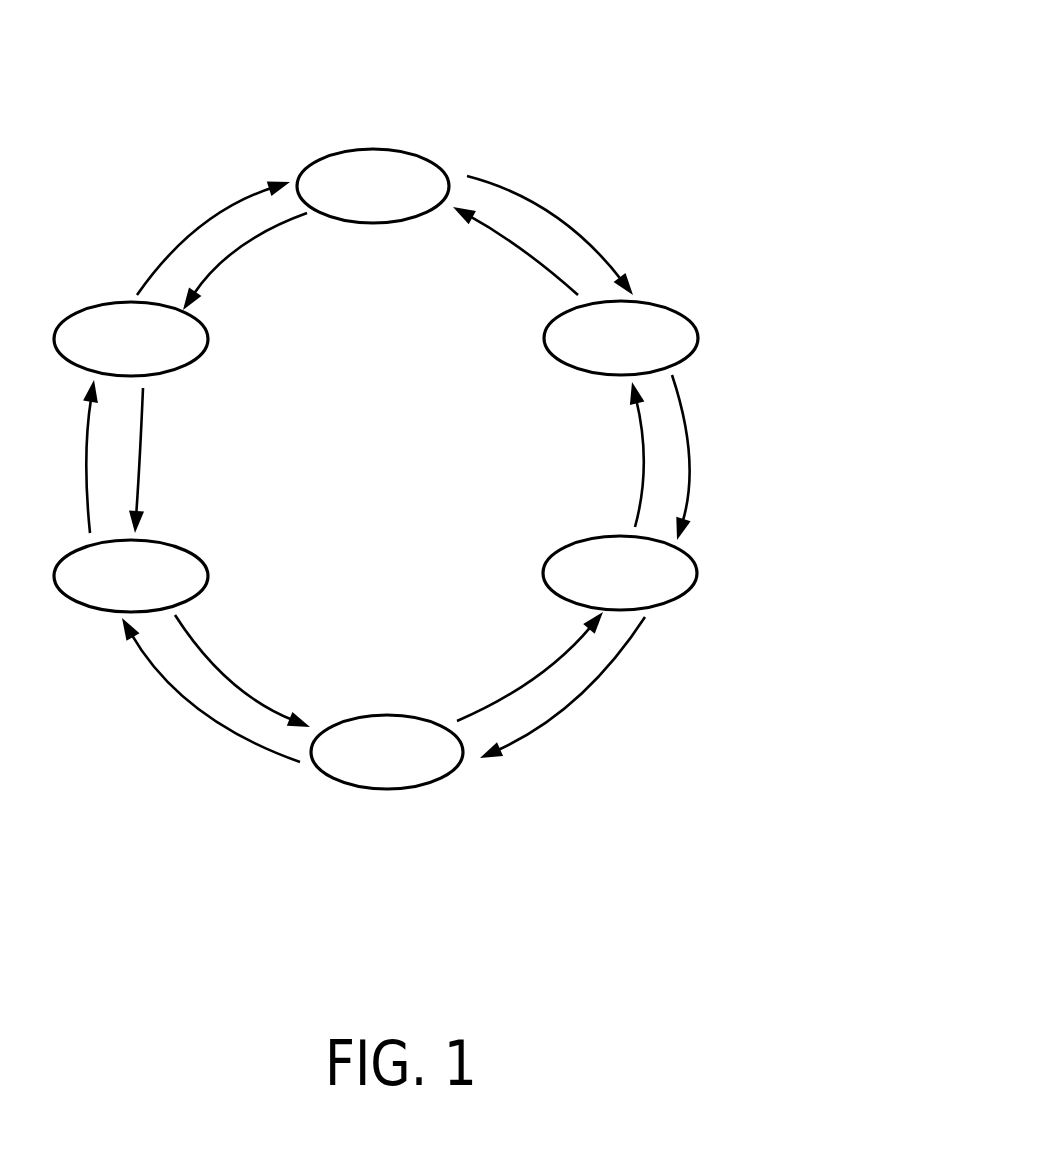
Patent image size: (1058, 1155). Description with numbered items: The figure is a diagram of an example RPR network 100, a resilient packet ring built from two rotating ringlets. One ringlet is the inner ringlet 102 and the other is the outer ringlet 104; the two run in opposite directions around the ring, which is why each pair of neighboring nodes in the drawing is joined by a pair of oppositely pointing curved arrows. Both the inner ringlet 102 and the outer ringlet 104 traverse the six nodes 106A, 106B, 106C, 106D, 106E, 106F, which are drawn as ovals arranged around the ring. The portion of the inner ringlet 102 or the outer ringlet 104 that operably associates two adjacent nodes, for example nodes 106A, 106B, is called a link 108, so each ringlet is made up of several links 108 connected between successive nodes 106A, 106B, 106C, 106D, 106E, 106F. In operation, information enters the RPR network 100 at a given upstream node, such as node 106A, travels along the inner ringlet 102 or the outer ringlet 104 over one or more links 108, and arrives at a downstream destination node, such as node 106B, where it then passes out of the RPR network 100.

The RPR network 100 is at (764, 218).
The inner ringlet 102 is at (497, 258).
The outer ringlet 104 is at (547, 187).
The link 108 is at (688, 448).
The node 106A is at (377, 149).
The node 106B is at (544, 340).
The node 106C is at (543, 578).
The node 106D is at (417, 716).
The node 106E is at (208, 576).
The node 106F is at (208, 342).